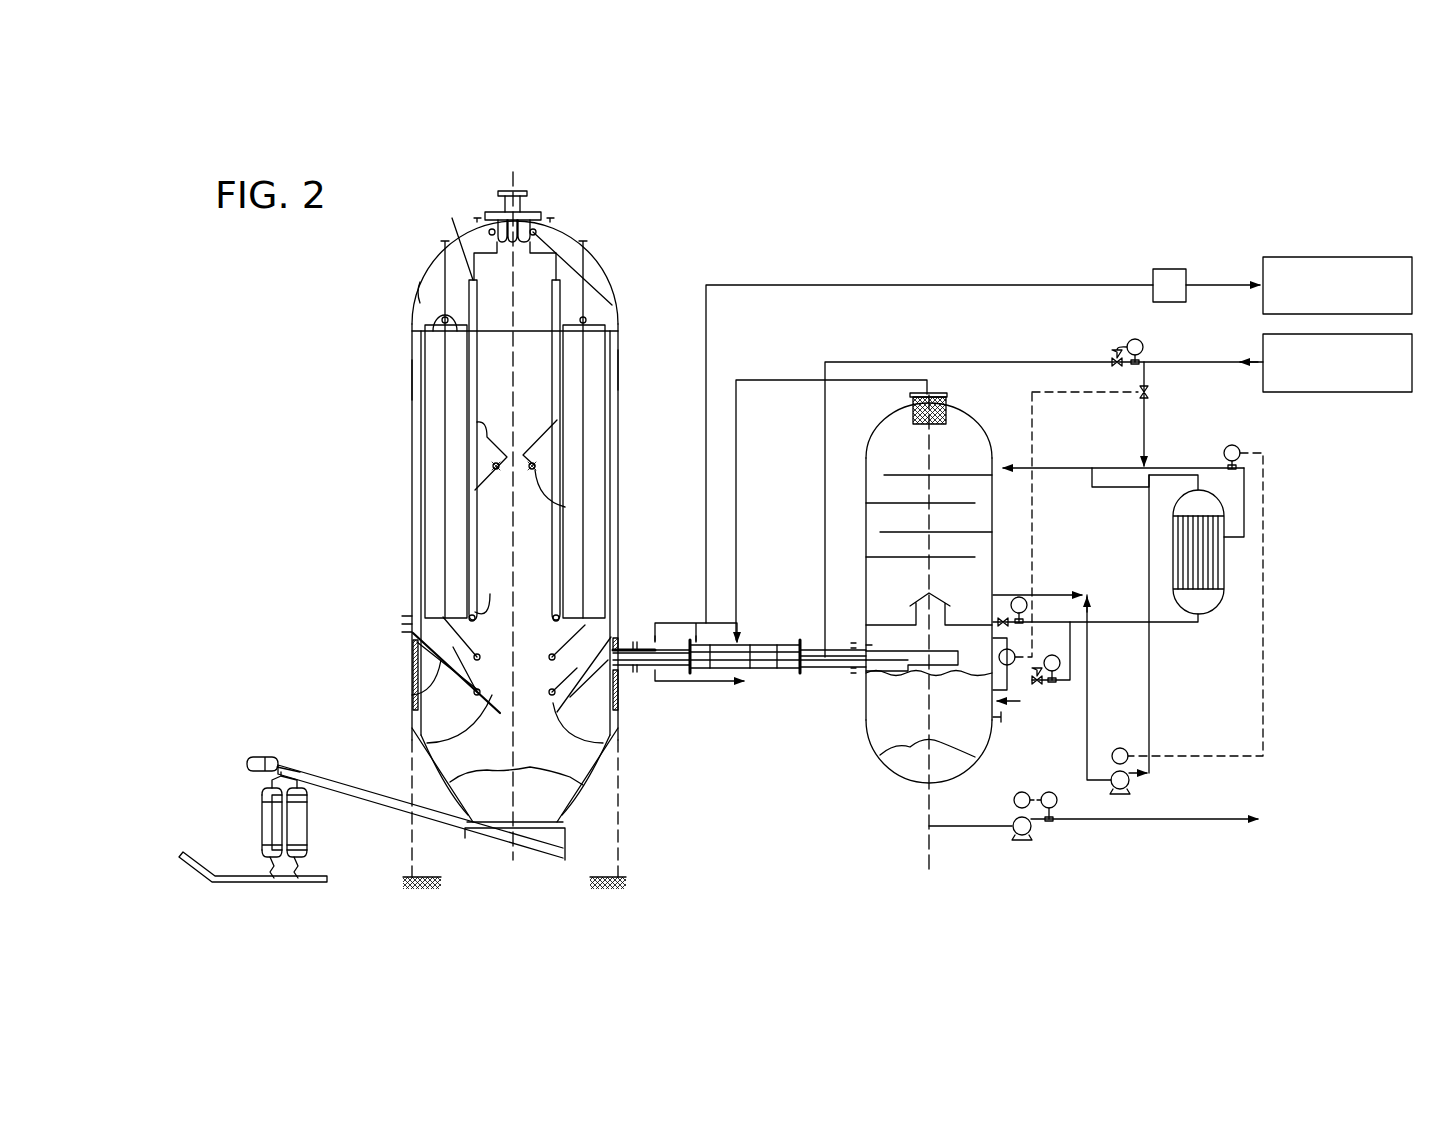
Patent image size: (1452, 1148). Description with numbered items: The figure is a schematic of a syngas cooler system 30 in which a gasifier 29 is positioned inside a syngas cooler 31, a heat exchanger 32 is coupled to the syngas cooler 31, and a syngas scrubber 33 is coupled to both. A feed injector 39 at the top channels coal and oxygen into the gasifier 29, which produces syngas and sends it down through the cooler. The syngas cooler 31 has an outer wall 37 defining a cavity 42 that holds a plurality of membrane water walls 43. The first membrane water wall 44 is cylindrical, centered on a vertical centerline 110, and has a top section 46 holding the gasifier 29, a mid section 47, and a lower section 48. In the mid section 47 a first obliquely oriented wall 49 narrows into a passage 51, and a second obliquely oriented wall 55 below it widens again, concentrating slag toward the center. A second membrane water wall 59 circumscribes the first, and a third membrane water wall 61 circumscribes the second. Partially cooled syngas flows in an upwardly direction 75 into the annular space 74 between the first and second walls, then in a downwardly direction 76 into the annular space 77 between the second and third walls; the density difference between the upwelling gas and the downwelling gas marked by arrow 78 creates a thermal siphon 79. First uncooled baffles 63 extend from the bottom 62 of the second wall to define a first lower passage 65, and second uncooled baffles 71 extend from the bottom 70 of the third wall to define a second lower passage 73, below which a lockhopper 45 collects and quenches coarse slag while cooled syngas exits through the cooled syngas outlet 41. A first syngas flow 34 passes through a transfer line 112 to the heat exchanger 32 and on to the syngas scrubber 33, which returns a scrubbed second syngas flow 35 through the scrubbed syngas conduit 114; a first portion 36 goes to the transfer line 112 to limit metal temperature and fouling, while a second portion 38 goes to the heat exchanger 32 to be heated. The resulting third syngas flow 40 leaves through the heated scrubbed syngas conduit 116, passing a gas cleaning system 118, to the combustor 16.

The combustor 16 is at (1312, 257).
The gasifier 29 is at (553, 292).
The syngas cooler system 30 is at (918, 226).
The syngas cooler 31 is at (578, 199).
The heat exchanger 32 is at (741, 704).
The syngas scrubber 33 is at (876, 779).
The first syngas flow 34 is at (910, 608).
The second syngas flow 35 is at (705, 570).
The first portion 36 is at (755, 683).
The syngas cooler outer wall 37 is at (618, 367).
The second portion 38 is at (741, 641).
The feed injector 39 is at (519, 190).
The third syngas flow 40 is at (757, 285).
The cooled syngas outlet 41 is at (627, 676).
The cavity 42 is at (503, 397).
The membrane water walls 43 is at (613, 310).
The first membrane water wall 44 is at (455, 488).
The lockhopper 45 is at (577, 828).
The top section 46 is at (546, 371).
The mid section 47 is at (503, 513).
The lower section 48 is at (503, 579).
The first obliquely oriented wall 49 is at (480, 425).
The passage 51 is at (525, 440).
The second obliquely oriented wall 55 is at (566, 507).
The second membrane water wall 59 is at (440, 516).
The third membrane water wall 61 is at (610, 520).
The bottom 62 is at (456, 610).
The first uncooled baffles 63 is at (433, 652).
The first lower passage 65 is at (474, 638).
The bottom 70 is at (405, 625).
The second uncooled baffles 71 is at (488, 681).
The second lower passage 73 is at (498, 673).
The annular space 74 is at (457, 564).
The upwardly direction 75 is at (490, 594).
The downwardly direction 76 is at (432, 325).
The annular space 77 is at (436, 403).
The arrow 78 is at (413, 737).
The thermal siphon 79 is at (436, 461).
The vertical centerline 110 is at (505, 270).
The transfer line 112 is at (667, 676).
The scrubbed syngas conduit 114 is at (757, 380).
The heated scrubbed syngas conduit 116 is at (980, 285).
The gas cleaning system 118 is at (1165, 269).